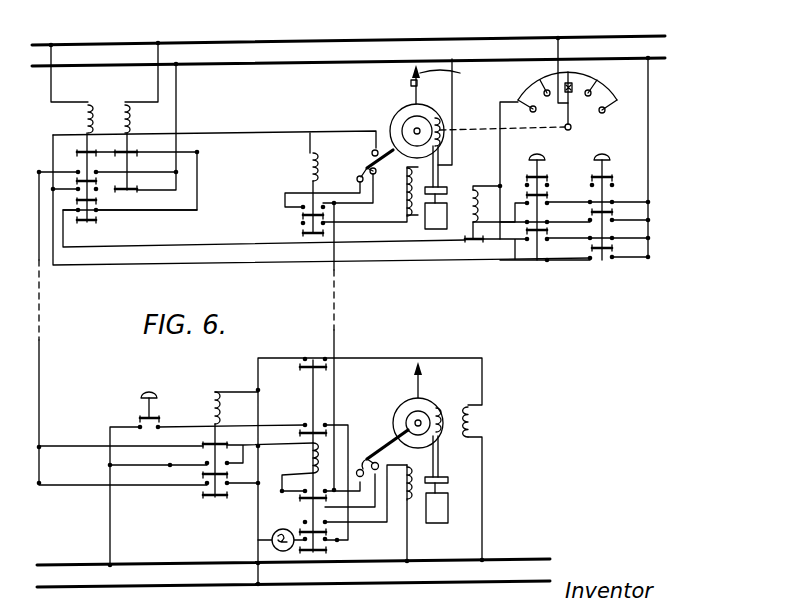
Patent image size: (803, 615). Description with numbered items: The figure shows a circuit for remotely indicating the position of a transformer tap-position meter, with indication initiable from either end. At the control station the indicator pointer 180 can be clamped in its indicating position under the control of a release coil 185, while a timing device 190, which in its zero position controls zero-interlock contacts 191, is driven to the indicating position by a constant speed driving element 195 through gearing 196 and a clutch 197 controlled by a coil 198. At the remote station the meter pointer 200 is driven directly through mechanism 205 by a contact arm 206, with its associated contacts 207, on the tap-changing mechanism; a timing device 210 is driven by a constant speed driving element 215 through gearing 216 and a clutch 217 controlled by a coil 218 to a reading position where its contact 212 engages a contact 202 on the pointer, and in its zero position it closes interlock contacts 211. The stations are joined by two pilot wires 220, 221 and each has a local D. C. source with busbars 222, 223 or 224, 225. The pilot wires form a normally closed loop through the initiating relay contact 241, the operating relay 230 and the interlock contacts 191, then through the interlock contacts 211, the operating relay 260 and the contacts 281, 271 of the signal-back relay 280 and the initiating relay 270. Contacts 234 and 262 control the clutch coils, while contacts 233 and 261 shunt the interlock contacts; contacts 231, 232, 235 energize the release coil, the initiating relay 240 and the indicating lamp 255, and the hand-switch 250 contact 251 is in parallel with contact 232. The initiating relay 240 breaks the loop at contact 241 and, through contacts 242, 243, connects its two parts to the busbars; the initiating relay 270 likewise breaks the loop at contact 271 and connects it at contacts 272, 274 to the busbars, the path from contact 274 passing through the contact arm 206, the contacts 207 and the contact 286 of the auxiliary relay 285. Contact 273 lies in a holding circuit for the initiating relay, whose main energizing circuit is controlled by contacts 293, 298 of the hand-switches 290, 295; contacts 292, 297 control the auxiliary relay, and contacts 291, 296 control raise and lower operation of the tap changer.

The indicator pointer 180 is at (421, 390).
The release coil 185 is at (469, 421).
The timing device 190 is at (395, 435).
The zero-interlock contacts 191 is at (363, 462).
The constant speed driving element 195 is at (448, 513).
The gearing 196 is at (436, 411).
The clutch 197 is at (450, 480).
The clutch coil 198 is at (410, 493).
The meter pointer 200 is at (453, 84).
The contact on meter pointer 202 is at (410, 84).
The mechanism 205 is at (487, 128).
The contact arm 206 is at (584, 136).
The contacts 207 is at (572, 110).
The timing device 210 is at (393, 127).
The interlock contacts 211 is at (368, 171).
The contact 212 is at (371, 152).
The constant speed driving element 215 is at (433, 230).
The gearing 216 is at (440, 122).
The clutch 217 is at (447, 196).
The clutch coil 218 is at (405, 188).
The pilot wire 220 is at (41, 325).
The pilot wire 221 is at (338, 310).
The D. C. busbar 222 is at (160, 558).
The D. C. busbar 223 is at (222, 585).
The D. C. busbar 224 is at (250, 66).
The D. C. busbar 225 is at (226, 45).
The operating relay 230 is at (311, 468).
The operating relay contact 231 is at (315, 364).
The operating relay contact 232 is at (307, 431).
The operating relay contact 233 is at (303, 498).
The operating relay contact 234 is at (327, 535).
The operating relay contact 235 is at (307, 553).
The initiating relay 240 is at (211, 394).
The initiating relay contact 241 is at (206, 442).
The initiating relay contact 242 is at (205, 478).
The initiating relay contact 243 is at (215, 497).
The hand-switch 250 is at (148, 394).
The hand-switch contact 251 is at (140, 418).
The indicating lamp 255 is at (272, 537).
The operating relay 260 is at (310, 152).
The operating relay contact 261 is at (303, 207).
The operating relay contact 262 is at (303, 223).
The initiating relay 270 is at (88, 104).
The initiating relay contact 271 is at (83, 150).
The initiating relay contact 272 is at (80, 178).
The initiating relay contact 273 is at (97, 202).
The initiating relay contact 274 is at (90, 222).
The signal-back relay 280 is at (126, 104).
The signal-back relay contact 281 is at (129, 152).
The auxiliary relay 285 is at (471, 190).
The auxiliary relay contact 286 is at (474, 242).
The hand-switch 290 is at (535, 158).
The hand-switch contact 291 is at (542, 178).
The hand-switch contact 292 is at (542, 196).
The hand-switch contact 293 is at (533, 233).
The hand-switch 295 is at (605, 158).
The hand-switch contact 296 is at (610, 178).
The hand-switch contact 297 is at (604, 212).
The hand-switch contact 298 is at (603, 251).